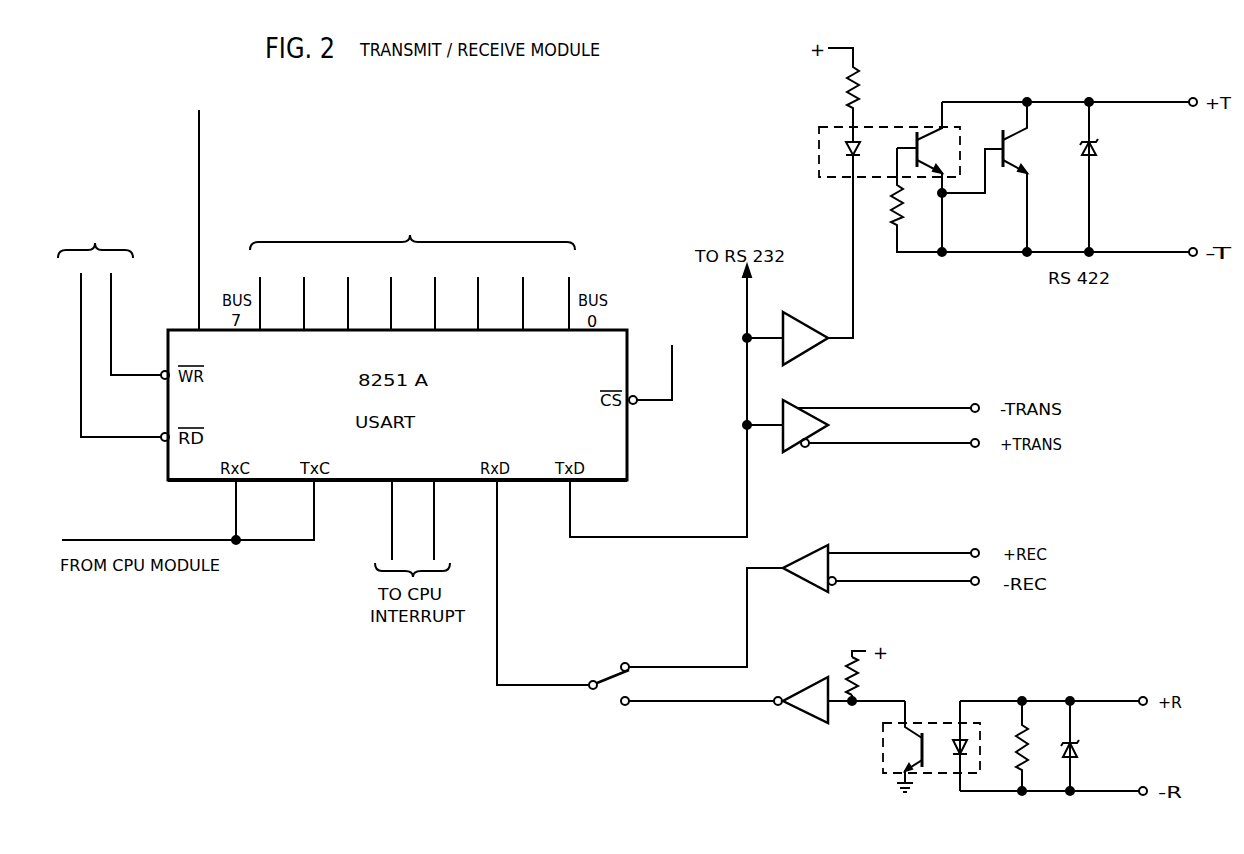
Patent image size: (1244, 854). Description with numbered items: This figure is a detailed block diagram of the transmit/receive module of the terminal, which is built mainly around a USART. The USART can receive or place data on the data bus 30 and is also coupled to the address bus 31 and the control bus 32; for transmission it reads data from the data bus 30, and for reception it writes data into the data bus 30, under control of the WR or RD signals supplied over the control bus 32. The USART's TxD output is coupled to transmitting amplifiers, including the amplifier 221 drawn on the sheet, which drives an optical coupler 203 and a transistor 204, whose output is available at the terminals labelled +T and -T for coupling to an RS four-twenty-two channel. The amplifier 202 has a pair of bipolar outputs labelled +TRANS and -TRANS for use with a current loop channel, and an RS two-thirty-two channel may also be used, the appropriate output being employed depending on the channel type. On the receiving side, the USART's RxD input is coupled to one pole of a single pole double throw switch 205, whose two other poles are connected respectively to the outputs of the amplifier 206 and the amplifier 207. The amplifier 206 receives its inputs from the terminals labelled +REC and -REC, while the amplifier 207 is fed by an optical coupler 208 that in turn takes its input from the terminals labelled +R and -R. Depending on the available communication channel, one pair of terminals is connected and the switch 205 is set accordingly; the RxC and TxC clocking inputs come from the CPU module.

The data bus 30 is at (412, 268).
The address bus 31 is at (265, 218).
The control bus 32 is at (113, 314).
The amplifier 202 is at (797, 403).
The optical coupler 203 is at (819, 147).
The transistor 204 is at (1003, 143).
The single pole double throw switch 205 is at (612, 672).
The amplifier 206 is at (812, 553).
The amplifier 207 is at (806, 690).
The optical coupler 208 is at (882, 747).
The driver 221 is at (827, 324).